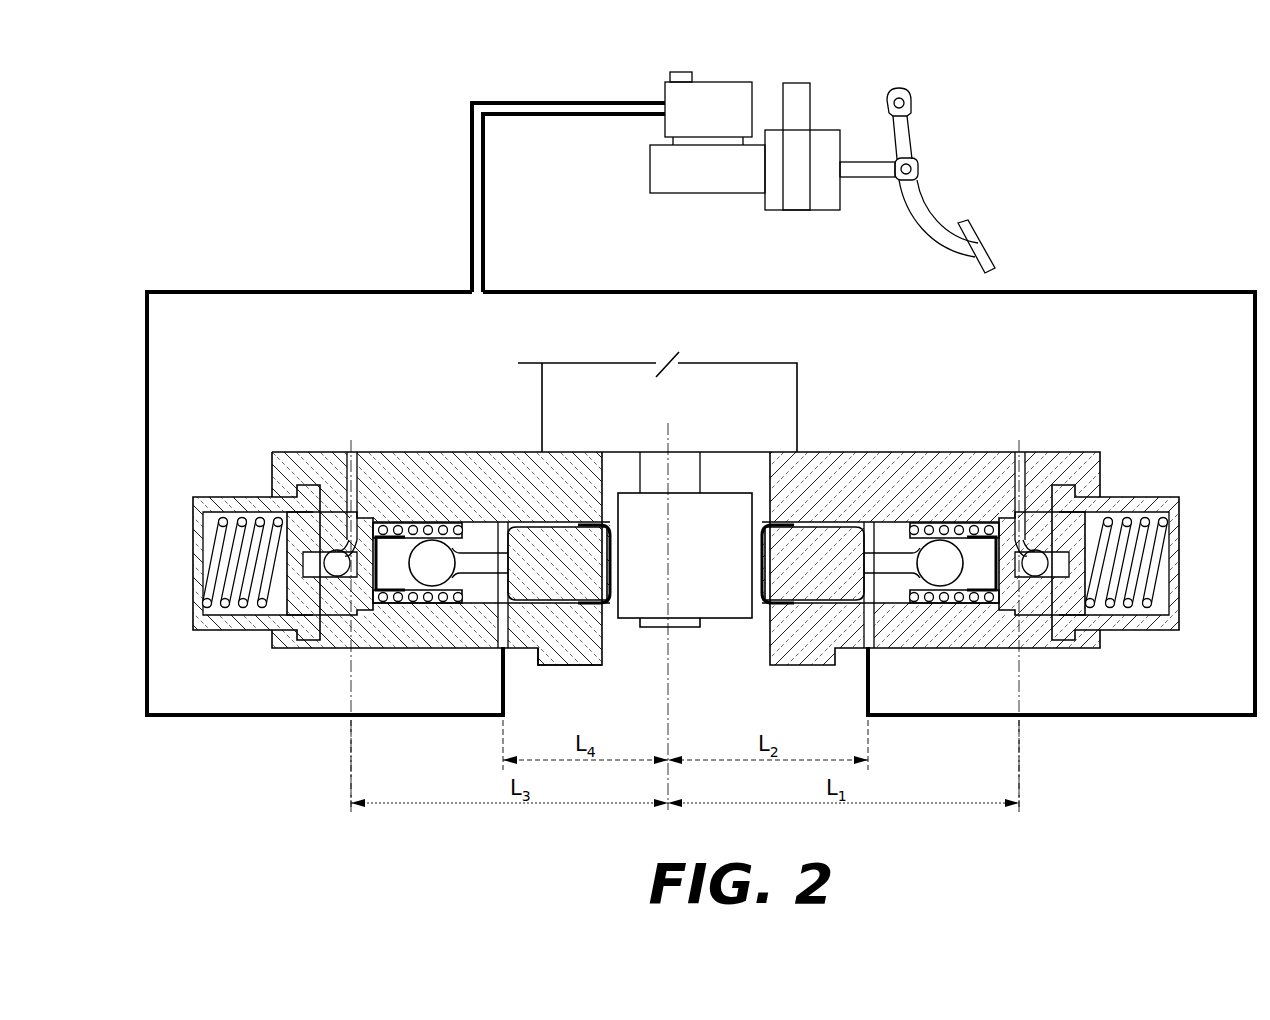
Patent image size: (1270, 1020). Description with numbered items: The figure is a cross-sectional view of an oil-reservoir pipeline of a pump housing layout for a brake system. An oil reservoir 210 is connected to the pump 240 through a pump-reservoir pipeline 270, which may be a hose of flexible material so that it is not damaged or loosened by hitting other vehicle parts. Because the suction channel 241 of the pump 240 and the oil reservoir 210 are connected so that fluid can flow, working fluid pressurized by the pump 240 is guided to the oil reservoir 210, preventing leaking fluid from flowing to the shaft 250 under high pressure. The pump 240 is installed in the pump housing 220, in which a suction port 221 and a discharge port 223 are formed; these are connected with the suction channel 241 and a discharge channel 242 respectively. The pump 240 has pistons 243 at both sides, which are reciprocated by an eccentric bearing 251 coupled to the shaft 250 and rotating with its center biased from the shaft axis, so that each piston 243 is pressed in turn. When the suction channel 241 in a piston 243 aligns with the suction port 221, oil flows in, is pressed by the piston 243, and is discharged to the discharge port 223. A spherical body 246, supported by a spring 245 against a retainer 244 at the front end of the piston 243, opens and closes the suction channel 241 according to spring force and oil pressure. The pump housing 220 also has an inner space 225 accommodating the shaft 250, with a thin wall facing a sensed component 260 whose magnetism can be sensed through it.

The oil reservoir 210 is at (722, 85).
The pump housing 220 is at (447, 453).
The suction port 221 is at (507, 650).
The discharge port 223 is at (350, 448).
The inner space 225 is at (590, 667).
The pump 240 is at (388, 500).
The suction channel 241 is at (893, 553).
The discharge channel 242 is at (1030, 543).
The piston 243 is at (783, 522).
The retainer 244 is at (1020, 537).
The spring 245 is at (962, 523).
The spherical body 246 is at (940, 527).
The shaft 250 is at (683, 457).
The eccentric bearing 251 is at (548, 405).
The sensed component 260 is at (682, 627).
The pump-reservoir pipeline 270 is at (1135, 290).